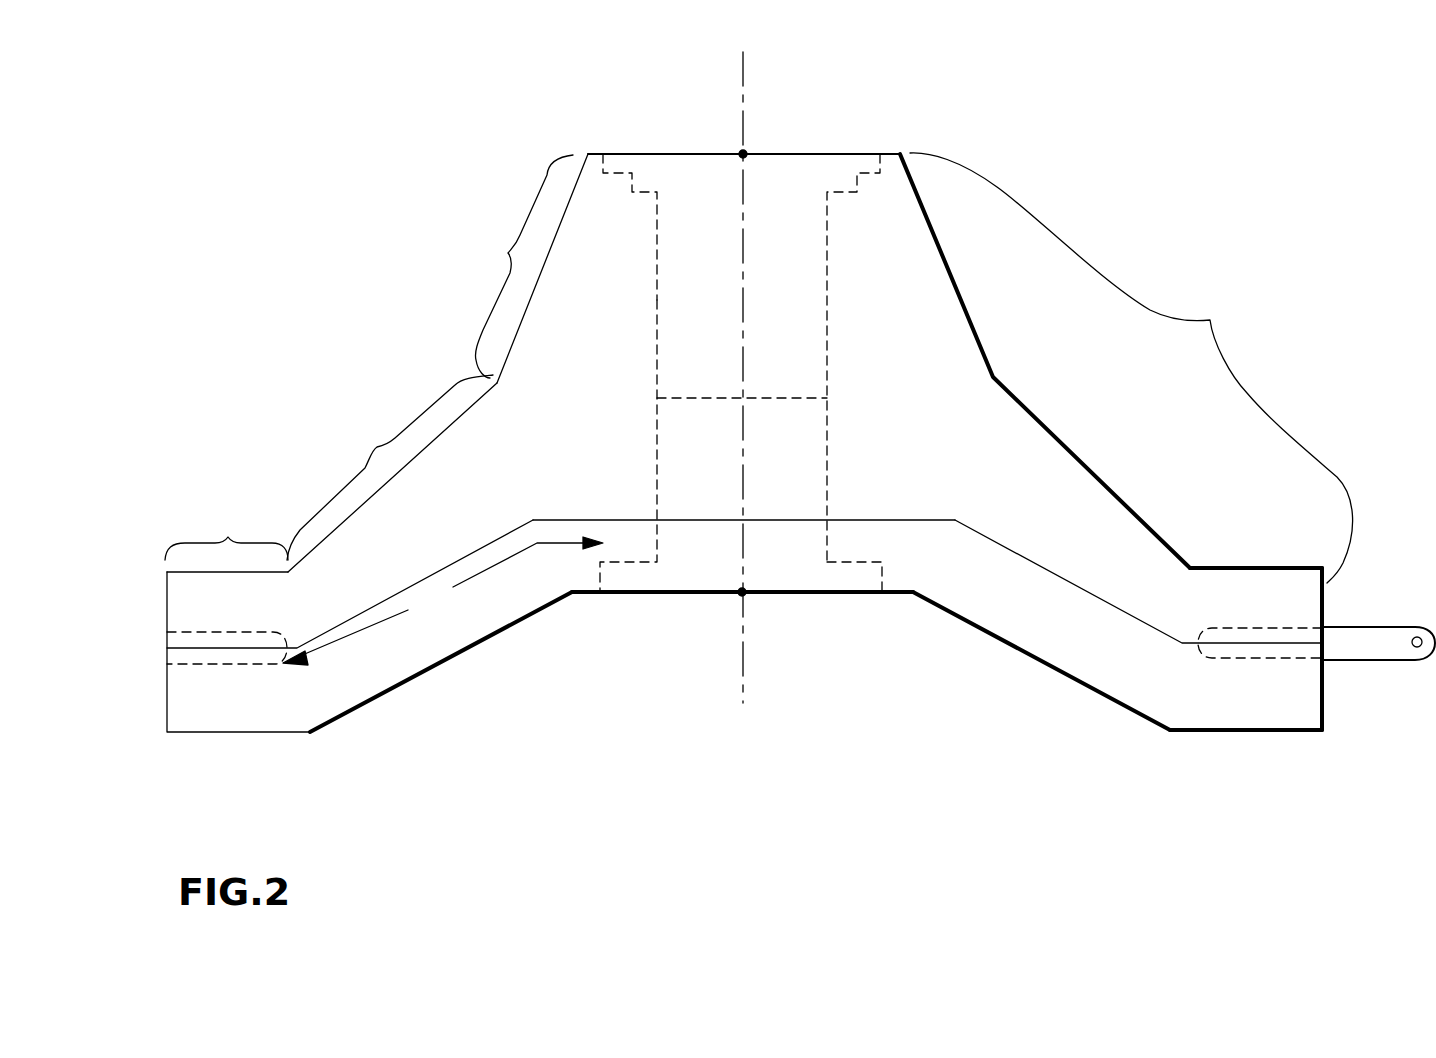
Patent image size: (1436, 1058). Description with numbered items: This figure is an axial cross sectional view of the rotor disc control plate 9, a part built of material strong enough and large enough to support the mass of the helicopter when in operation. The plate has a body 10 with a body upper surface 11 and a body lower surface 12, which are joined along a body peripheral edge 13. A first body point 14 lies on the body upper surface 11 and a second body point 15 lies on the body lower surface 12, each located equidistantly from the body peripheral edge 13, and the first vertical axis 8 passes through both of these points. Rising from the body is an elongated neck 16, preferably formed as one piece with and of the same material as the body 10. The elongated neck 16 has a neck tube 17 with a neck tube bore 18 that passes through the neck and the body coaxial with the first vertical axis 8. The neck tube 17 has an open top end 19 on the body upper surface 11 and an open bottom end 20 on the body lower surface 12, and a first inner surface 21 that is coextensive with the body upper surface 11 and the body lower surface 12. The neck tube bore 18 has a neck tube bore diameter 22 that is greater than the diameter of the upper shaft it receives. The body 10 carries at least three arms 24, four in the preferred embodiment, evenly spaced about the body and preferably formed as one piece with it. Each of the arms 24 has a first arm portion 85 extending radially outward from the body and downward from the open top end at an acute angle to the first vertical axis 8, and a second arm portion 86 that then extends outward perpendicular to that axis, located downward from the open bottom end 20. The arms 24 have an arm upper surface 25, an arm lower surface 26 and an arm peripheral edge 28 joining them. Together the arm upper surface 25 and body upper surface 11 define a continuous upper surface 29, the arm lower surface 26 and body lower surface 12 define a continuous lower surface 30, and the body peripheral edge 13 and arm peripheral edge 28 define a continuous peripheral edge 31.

The first vertical axis 8 is at (743, 378).
The rotor disc control plate 9 is at (1131, 368).
The body 10 is at (879, 406).
The body upper surface 11 is at (890, 153).
The body lower surface 12 is at (903, 595).
The body peripheral edge 13 is at (913, 517).
The first body point 14 is at (745, 152).
The second body point 15 is at (737, 593).
The elongated neck 16 is at (527, 268).
The neck tube 17 is at (657, 278).
The neck tube bore 18 is at (692, 357).
The open top end 19 is at (700, 166).
The open bottom end 20 is at (777, 580).
The first inner surface 21 is at (827, 340).
The neck tube bore diameter 22 is at (728, 400).
The arms 24 is at (347, 675).
The arm upper surface 25 is at (1275, 570).
The arm lower surface 26 is at (1062, 667).
The arm peripheral edge 28 is at (290, 645).
The upper surface 29 is at (1036, 506).
The lower surface 30 is at (941, 576).
The peripheral edge 31 is at (385, 592).
The first arm portion 85 is at (392, 473).
The second arm portion 86 is at (226, 541).